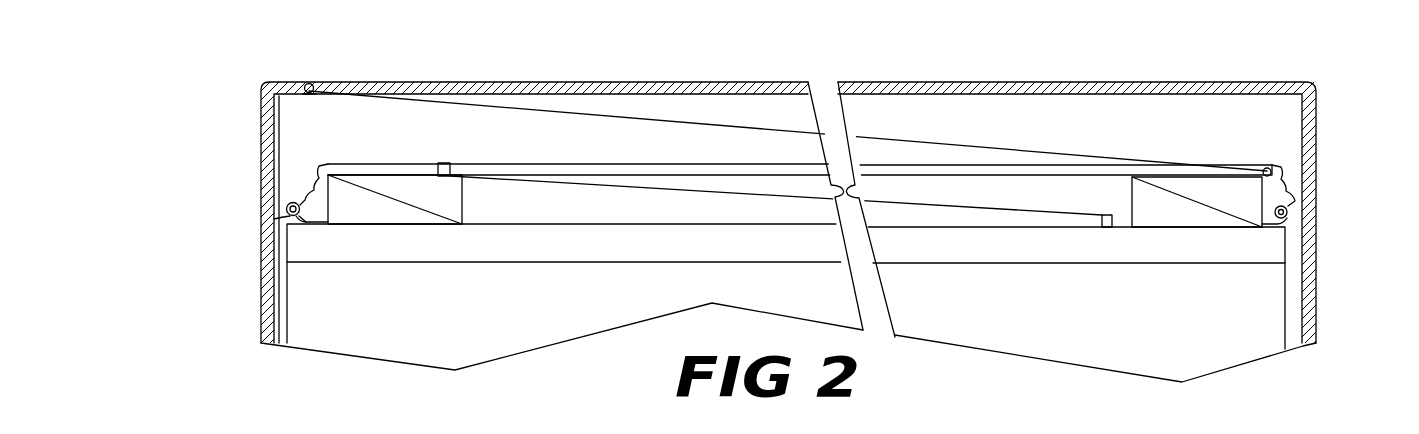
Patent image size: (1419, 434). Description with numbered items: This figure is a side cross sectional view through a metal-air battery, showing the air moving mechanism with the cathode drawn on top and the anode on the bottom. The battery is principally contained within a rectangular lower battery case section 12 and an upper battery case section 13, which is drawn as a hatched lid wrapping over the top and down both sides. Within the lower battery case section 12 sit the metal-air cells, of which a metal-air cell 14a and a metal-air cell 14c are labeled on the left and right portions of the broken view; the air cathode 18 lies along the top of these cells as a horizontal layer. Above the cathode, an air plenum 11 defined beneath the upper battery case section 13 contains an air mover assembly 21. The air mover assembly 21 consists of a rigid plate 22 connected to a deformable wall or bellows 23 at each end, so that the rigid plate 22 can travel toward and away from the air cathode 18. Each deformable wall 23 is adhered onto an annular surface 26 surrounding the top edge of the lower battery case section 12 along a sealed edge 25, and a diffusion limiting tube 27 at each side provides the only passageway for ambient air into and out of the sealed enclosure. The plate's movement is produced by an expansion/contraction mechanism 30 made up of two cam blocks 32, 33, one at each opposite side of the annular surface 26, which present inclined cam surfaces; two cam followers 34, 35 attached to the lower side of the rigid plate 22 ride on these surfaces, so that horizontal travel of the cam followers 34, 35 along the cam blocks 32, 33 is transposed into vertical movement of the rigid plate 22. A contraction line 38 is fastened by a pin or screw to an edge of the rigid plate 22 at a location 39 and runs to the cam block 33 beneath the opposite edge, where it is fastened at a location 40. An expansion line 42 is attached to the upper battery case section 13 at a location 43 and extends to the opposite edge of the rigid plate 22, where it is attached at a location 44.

The air plenum 11 is at (1157, 126).
The lower battery case section 12 is at (1318, 284).
The upper battery case section 13 is at (702, 81).
The metal-air cell 14a is at (468, 356).
The metal-air cell 14c is at (1180, 360).
The air cathode 18 is at (590, 241).
The air mover assembly 21 is at (550, 161).
The rigid plate 22 is at (1003, 172).
The deformable wall or bellows 23 is at (316, 172).
The sealed edge 25 is at (305, 224).
The annular surface 26 is at (262, 219).
The diffusion limiting tube 27 is at (295, 203).
The expansion/contraction mechanism 30 is at (975, 119).
The cam block 32 is at (386, 211).
The cam block 33 is at (1178, 222).
The cam follower 34 is at (445, 200).
The cam follower 35 is at (1229, 198).
The contraction line 38 is at (902, 207).
The attachment location 39 is at (441, 164).
The attachment location 40 is at (1110, 228).
The expansion line 42 is at (910, 140).
The attachment location 43 is at (309, 84).
The attachment location 44 is at (1266, 168).